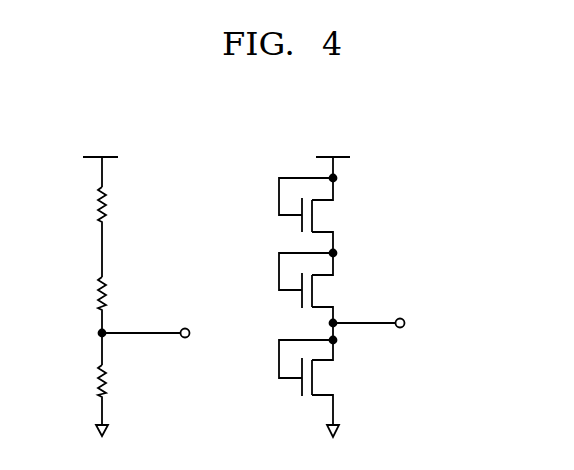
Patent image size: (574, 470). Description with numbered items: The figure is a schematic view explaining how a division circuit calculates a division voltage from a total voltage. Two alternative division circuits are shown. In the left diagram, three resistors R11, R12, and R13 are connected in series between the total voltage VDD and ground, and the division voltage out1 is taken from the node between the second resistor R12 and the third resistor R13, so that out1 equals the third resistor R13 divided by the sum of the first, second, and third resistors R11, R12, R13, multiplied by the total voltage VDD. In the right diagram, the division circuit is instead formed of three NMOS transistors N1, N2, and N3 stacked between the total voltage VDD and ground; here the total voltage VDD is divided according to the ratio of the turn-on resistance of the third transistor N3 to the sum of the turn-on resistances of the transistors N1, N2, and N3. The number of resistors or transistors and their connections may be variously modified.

The first resistor R11 is at (119, 232).
The second resistor R12 is at (119, 321).
The third resistor R13 is at (118, 400).
The first transistor N1 is at (320, 214).
The second transistor N2 is at (320, 295).
The third transistor N3 is at (320, 387).
The total voltage VDD is at (218, 156).
The division voltage out1 is at (275, 329).